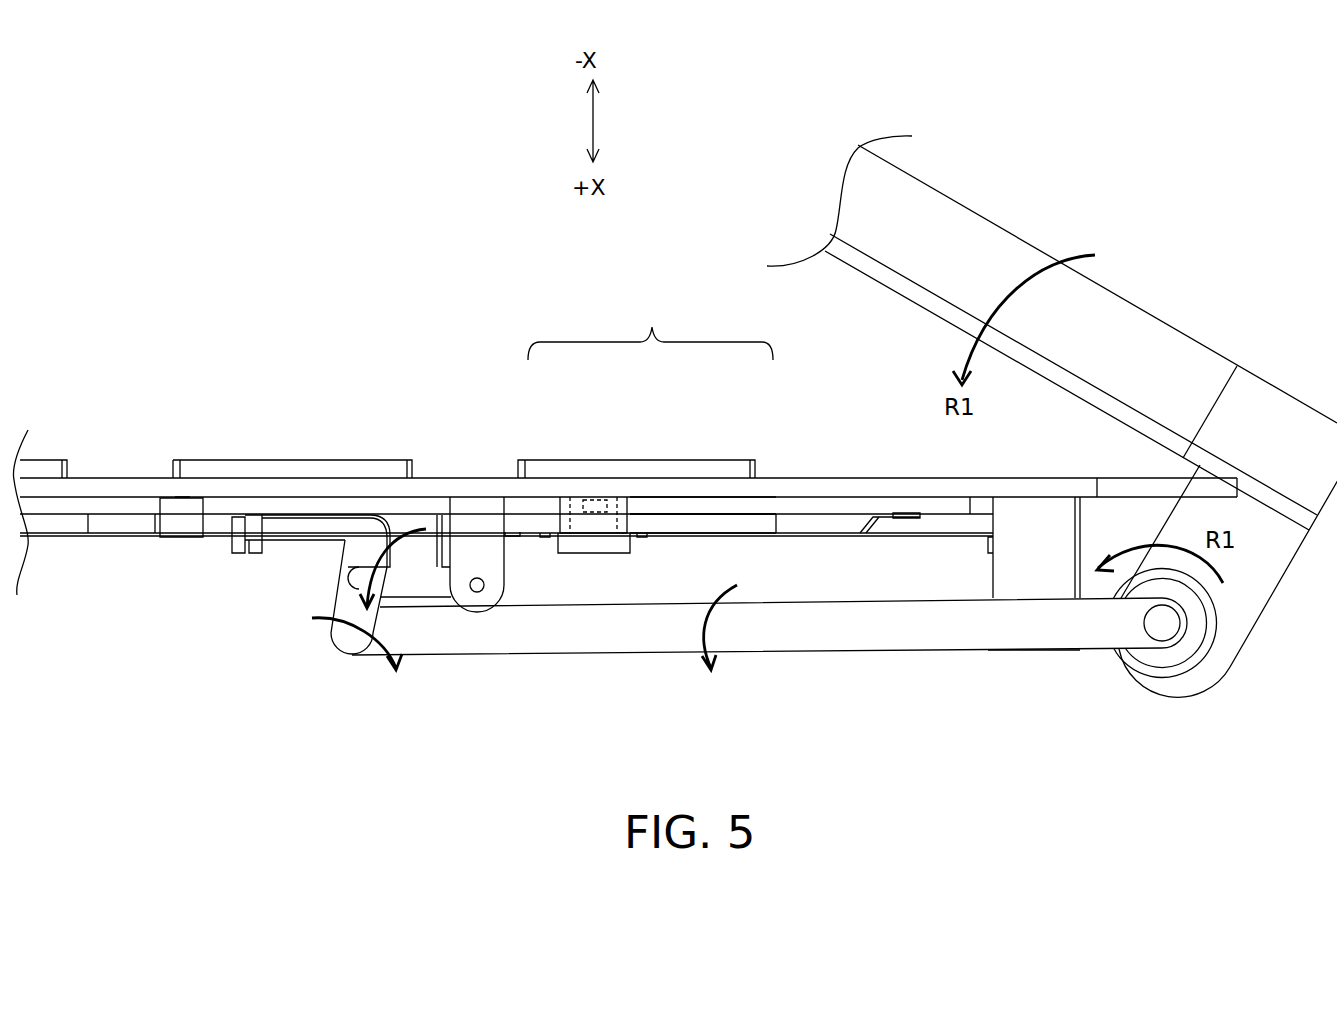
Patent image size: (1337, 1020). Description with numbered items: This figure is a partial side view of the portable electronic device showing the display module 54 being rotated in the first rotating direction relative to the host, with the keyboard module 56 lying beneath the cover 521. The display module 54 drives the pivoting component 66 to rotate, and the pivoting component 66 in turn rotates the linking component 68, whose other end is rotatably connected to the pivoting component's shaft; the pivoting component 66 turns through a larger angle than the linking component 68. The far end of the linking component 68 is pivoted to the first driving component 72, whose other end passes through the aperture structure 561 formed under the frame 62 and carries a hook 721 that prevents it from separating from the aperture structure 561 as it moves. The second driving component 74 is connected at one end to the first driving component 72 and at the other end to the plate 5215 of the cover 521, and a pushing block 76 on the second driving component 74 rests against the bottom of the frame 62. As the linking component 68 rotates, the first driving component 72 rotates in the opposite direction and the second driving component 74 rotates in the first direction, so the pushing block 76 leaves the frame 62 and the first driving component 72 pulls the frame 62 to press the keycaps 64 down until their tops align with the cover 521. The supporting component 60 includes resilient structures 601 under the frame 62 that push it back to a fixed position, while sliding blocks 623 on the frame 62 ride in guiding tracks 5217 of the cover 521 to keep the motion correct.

The display module 54 is at (850, 192).
The keyboard module 56 is at (647, 416).
The keycap 64 is at (590, 470).
The supporting component 60 is at (682, 533).
The frame 62 is at (722, 505).
The plate 5215 is at (478, 508).
The cover 521 is at (810, 492).
The resilient structure 601 is at (897, 517).
The hook 721 is at (235, 545).
The aperture structure 561 is at (262, 552).
The first driving component 72 is at (300, 532).
The second driving component 74 is at (427, 585).
The pushing block 76 is at (411, 540).
The sliding block 623 is at (594, 515).
The guiding track 5217 is at (618, 515).
The linking component 68 is at (797, 638).
The pivoting component 66 is at (1187, 642).